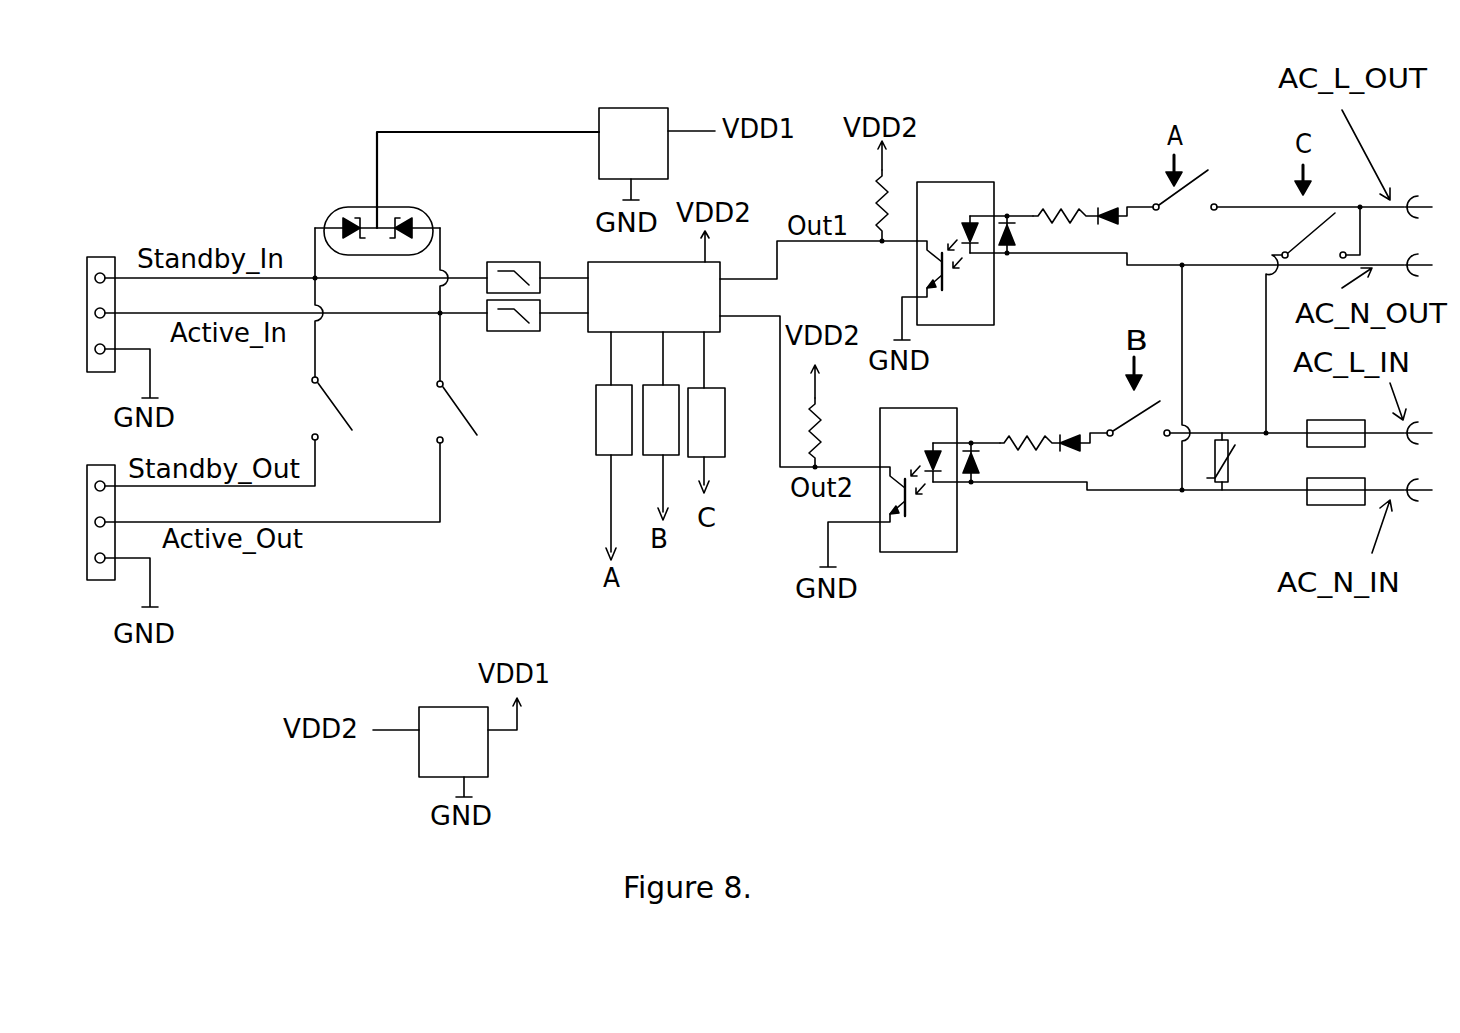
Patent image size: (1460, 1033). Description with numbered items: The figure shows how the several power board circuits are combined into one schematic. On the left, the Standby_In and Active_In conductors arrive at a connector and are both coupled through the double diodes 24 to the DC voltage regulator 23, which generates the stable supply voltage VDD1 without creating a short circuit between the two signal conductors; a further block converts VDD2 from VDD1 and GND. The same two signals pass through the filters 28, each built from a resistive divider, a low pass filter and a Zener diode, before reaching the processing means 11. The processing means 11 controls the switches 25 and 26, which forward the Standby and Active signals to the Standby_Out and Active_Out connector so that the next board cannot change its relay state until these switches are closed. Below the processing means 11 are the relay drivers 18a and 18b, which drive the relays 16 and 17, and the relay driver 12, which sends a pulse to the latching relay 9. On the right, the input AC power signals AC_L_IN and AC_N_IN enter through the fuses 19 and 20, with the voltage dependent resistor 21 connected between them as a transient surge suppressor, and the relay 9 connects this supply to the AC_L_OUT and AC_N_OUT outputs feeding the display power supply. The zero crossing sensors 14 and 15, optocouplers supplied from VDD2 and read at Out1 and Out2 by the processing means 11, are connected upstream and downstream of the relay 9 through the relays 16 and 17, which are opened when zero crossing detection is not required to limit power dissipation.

The relay 9 is at (1311, 235).
The processing means 11 is at (654, 297).
The relay driver 12 is at (706, 422).
The zero crossing sensor 14 is at (910, 474).
The zero crossing sensor 15 is at (962, 244).
The relay 16 is at (1138, 430).
The relay 17 is at (1185, 199).
The relay driver 18a is at (614, 420).
The relay driver 18b is at (661, 420).
The fuse 19 is at (1336, 416).
The fuse 20 is at (1336, 508).
The voltage dependent resistor 21 is at (1237, 461).
The DC voltage regulator 23 is at (633, 143).
The diodes 24 is at (457, 193).
The switch 25 is at (352, 408).
The switch 26 is at (472, 412).
The filter 28 is at (513, 293).